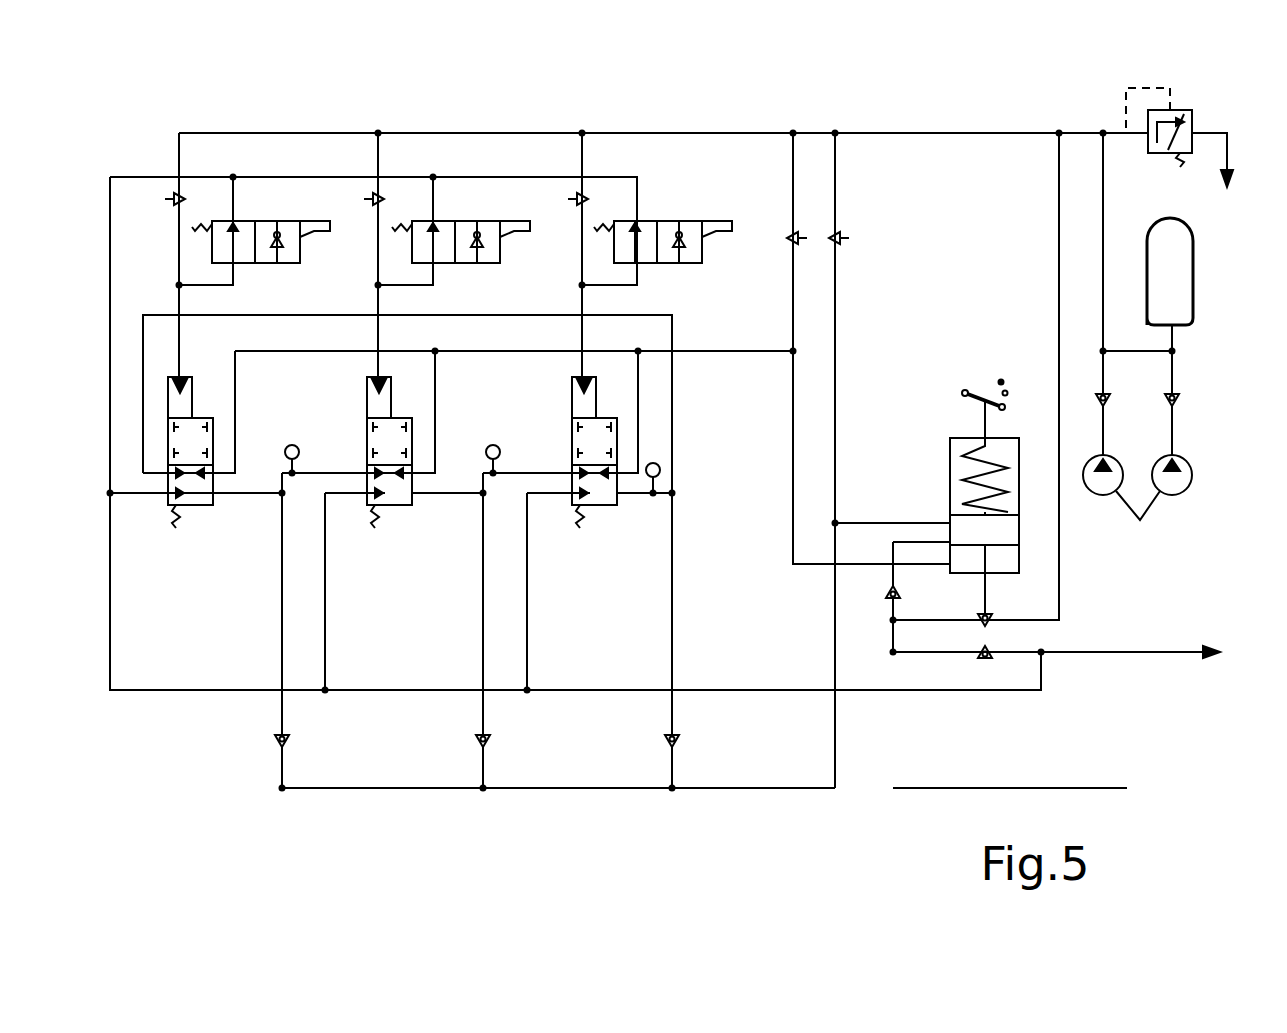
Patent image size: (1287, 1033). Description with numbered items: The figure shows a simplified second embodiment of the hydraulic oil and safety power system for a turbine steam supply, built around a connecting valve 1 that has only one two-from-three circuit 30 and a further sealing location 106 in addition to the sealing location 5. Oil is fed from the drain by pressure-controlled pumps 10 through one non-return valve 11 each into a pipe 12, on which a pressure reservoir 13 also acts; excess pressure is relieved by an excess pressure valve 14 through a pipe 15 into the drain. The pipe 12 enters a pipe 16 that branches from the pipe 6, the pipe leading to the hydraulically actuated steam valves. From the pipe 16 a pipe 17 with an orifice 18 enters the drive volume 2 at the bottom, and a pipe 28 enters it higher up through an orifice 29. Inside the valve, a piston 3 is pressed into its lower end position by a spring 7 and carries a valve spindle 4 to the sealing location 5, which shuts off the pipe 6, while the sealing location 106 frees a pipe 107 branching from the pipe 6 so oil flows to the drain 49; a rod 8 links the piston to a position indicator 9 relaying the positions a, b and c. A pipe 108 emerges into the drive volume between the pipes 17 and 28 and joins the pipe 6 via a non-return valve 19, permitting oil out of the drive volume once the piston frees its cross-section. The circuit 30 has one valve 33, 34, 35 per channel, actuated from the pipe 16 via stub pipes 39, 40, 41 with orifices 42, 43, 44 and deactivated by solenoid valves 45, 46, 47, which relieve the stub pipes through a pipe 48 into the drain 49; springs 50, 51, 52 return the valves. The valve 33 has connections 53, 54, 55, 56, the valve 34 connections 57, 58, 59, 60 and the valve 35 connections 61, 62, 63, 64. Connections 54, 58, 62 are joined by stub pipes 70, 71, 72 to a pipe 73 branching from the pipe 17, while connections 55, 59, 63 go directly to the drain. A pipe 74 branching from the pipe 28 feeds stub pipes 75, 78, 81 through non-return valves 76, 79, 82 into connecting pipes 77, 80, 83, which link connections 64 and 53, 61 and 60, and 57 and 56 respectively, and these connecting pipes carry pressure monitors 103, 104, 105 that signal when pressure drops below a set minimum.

The connecting valve 1 is at (940, 612).
The drive volume 2 is at (1010, 561).
The piston 3 is at (1008, 535).
The valve spindle 4 is at (992, 589).
The sealing location 5 is at (995, 617).
The pipe 6 is at (1059, 172).
The spring 7 is at (1010, 460).
The rod 8 is at (980, 422).
The position indicator 9 is at (985, 400).
The pressure-controlled pumps 10 is at (1137, 504).
The non-return valve 11 is at (1110, 405).
The pipe 12 is at (1105, 298).
The pressure reservoir 13 is at (1182, 277).
The excess pressure valve 14 is at (1183, 130).
The pipe 15 is at (1218, 130).
The pipe 16 is at (927, 133).
The pipe 17 is at (793, 150).
The orifice 18 is at (790, 237).
The non-return valve 19 is at (889, 600).
The pipe 28 is at (838, 150).
The orifice 29 is at (843, 237).
The first three-channel hydraulic two-from-three circuit 30 is at (503, 406).
The valve 33 is at (190, 418).
The valve 34 is at (390, 418).
The valve 35 is at (595, 418).
The stub pipe 39 is at (177, 160).
The stub pipe 40 is at (378, 162).
The stub pipe 41 is at (582, 150).
The orifice 42 is at (186, 195).
The orifice 43 is at (385, 195).
The orifice 44 is at (589, 195).
The solenoid valve 45 is at (288, 222).
The solenoid valve 46 is at (490, 222).
The solenoid valve 47 is at (700, 205).
The pipe 48 is at (110, 325).
The drain 49 is at (1183, 656).
The spring 50 is at (178, 525).
The spring 51 is at (377, 525).
The spring 52 is at (582, 525).
The connection 53 is at (160, 473).
The connection 54 is at (228, 473).
The connection 55 is at (170, 497).
The connection 56 is at (213, 497).
The connection 57 is at (367, 473).
The connection 58 is at (417, 473).
The connection 59 is at (367, 497).
The connection 60 is at (412, 497).
The connection 61 is at (572, 473).
The connection 62 is at (620, 473).
The connection 63 is at (572, 497).
The connection 64 is at (617, 497).
The stub pipe 70 is at (235, 400).
The stub pipe 71 is at (435, 400).
The stub pipe 72 is at (638, 400).
The pipe 73 is at (718, 351).
The pipe 74 is at (785, 790).
The stub pipe 75 is at (672, 705).
The non-return valve 76 is at (668, 745).
The connecting pipe 77 is at (672, 408).
The stub pipe 78 is at (483, 705).
The non-return valve 79 is at (480, 745).
The connecting pipe 80 is at (510, 478).
The stub pipe 81 is at (283, 705).
The non-return valve 82 is at (278, 745).
The connecting pipe 83 is at (307, 478).
The pressure monitor 103 is at (660, 470).
The pressure monitor 104 is at (292, 445).
The pressure monitor 105 is at (498, 447).
The further sealing location 106 is at (993, 655).
The pipe 107 is at (913, 656).
The pipe 108 is at (893, 543).
The position a is at (1008, 408).
The position b is at (1008, 393).
The position c is at (1006, 380).